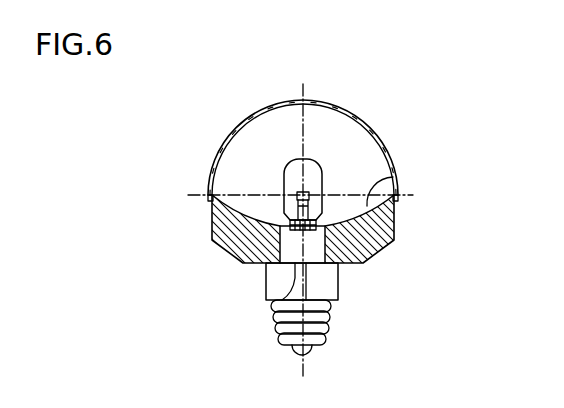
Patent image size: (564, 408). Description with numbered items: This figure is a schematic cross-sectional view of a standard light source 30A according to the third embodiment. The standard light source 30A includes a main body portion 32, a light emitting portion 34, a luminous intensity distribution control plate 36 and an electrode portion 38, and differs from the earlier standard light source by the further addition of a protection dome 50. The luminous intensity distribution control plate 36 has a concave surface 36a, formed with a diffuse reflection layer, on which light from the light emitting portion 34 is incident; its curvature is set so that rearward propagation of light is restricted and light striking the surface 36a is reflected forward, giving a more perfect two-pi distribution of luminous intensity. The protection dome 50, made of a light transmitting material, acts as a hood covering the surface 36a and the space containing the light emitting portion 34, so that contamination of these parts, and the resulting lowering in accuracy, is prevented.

The standard light source 30A is at (540, 92).
The protection dome 50 is at (341, 108).
The light emitting portion 34 is at (312, 172).
The luminous intensity distribution control plate 36 is at (380, 227).
The concave surface 36a is at (388, 181).
The main body portion 32 is at (327, 287).
The electrode portion 38 is at (333, 323).